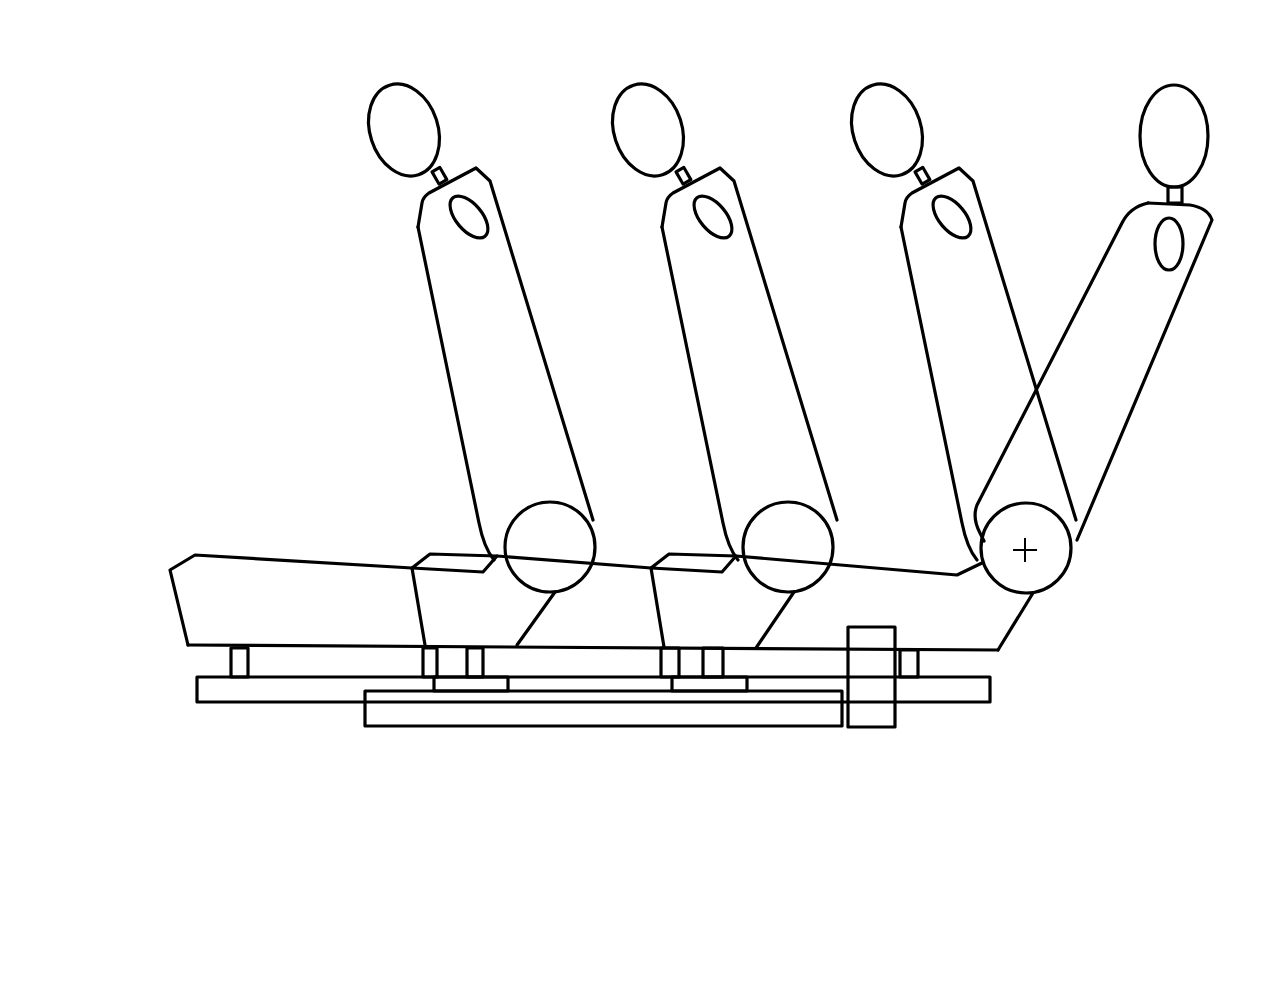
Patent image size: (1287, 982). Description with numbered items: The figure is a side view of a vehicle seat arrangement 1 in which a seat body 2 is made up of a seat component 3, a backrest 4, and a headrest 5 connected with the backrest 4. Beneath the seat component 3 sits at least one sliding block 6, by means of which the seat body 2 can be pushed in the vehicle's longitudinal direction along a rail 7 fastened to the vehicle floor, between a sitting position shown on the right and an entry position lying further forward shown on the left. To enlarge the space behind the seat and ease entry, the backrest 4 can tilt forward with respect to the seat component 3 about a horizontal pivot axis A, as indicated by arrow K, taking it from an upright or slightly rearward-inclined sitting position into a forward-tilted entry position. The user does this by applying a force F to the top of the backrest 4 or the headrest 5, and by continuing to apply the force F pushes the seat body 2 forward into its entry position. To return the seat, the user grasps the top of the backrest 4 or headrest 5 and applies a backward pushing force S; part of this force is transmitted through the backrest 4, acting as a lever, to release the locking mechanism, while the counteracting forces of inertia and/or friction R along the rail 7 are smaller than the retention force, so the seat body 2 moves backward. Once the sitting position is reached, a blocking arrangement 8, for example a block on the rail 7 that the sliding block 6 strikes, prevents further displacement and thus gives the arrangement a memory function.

The vehicle seat arrangement 1 is at (286, 61).
The seat body 2 is at (296, 328).
The seat component 3 is at (235, 570).
The backrest 4 is at (462, 365).
The headrest 5 is at (383, 136).
The sliding block 6 is at (208, 689).
The rail 7 is at (384, 715).
The blocking arrangement 8 is at (865, 720).
The horizontal pivot axis A is at (1032, 556).
The pushing force S is at (553, 236).
The forces of inertia and/or friction R is at (543, 763).
The force F is at (1282, 240).
The arrow K is at (1132, 98).